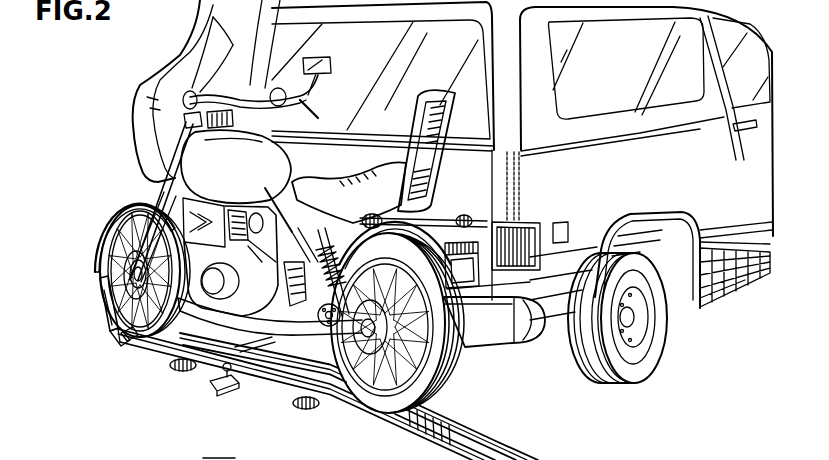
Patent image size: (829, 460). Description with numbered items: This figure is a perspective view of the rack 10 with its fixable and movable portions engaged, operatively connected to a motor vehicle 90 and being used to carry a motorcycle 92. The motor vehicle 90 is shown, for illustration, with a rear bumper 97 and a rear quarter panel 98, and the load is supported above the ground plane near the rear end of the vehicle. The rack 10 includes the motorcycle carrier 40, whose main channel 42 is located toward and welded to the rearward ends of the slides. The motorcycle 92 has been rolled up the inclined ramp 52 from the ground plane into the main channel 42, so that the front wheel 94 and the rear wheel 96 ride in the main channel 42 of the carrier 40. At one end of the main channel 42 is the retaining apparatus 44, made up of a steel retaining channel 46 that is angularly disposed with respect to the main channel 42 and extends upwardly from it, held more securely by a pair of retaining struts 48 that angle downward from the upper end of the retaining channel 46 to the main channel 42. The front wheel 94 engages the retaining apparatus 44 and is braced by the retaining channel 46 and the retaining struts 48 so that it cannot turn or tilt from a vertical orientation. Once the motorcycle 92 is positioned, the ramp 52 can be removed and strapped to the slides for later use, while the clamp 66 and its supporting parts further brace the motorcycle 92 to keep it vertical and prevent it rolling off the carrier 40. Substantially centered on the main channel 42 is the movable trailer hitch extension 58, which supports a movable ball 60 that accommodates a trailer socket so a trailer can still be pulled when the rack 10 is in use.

The rack 10 is at (322, 362).
The motorcycle carrier 40 is at (329, 410).
The main channel 42 is at (275, 380).
The retaining apparatus 44 is at (108, 328).
The retaining channel 46 is at (103, 283).
The retaining struts 48 is at (129, 343).
The inclined ramp 52 is at (535, 459).
The movable trailer hitch extension 58 is at (225, 394).
The movable ball 60 is at (223, 369).
The clamp 66 is at (210, 458).
The motor vehicle 90 is at (712, 9).
The motorcycle 92 is at (137, 145).
The front wheel 94 is at (115, 222).
The rear wheel 96 is at (447, 383).
The rear bumper 97 is at (530, 338).
The rear quarter panel 98 is at (556, 315).